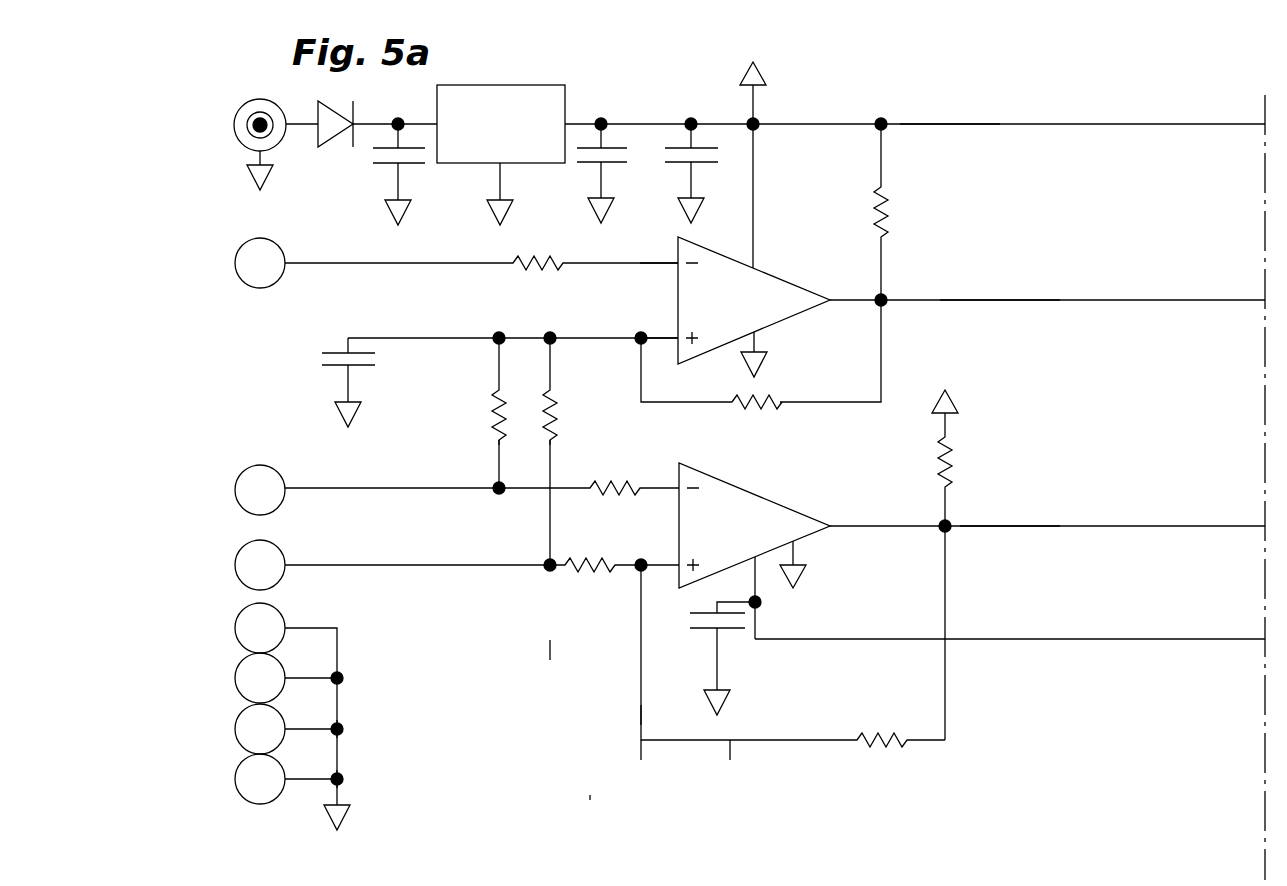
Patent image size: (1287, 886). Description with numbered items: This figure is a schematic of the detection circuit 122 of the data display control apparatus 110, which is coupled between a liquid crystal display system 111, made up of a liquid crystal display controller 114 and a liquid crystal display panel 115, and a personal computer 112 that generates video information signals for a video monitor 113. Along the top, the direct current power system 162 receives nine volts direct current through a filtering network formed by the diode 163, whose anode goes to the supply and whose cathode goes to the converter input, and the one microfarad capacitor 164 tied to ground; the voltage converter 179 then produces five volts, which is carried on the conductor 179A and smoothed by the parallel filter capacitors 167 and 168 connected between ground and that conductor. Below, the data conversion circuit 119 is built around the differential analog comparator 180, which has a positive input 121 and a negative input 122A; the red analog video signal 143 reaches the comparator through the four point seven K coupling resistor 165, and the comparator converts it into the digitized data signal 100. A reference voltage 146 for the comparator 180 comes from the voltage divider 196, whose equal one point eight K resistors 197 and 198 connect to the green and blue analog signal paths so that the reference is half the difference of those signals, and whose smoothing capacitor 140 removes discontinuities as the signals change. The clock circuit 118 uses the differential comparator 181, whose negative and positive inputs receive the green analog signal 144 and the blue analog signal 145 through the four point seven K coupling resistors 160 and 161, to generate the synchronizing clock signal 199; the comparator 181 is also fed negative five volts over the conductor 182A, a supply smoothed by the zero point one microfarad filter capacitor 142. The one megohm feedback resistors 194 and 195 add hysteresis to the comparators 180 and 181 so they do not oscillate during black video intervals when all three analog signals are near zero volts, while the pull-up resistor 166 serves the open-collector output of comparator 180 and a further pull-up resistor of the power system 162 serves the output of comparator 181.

The direct current power system 162 is at (268, 94).
The diode 163 is at (333, 147).
The capacitor 164 is at (395, 180).
The voltage converter 179 is at (550, 85).
The filter capacitor 167 is at (590, 148).
The filter capacitor 168 is at (673, 146).
The data conversion circuit 119 is at (791, 107).
The conductor 179A is at (934, 124).
The pullup resistor 166 is at (886, 213).
The coupling resistor 165 is at (528, 256).
The negative input 122A is at (675, 270).
The differential analog comparator 180 is at (792, 281).
The data signal 100 is at (1006, 300).
The red analog video information signal 143 is at (255, 288).
The reference voltage 146 is at (499, 331).
The smoothing capacitor 140 is at (334, 365).
The positive input 121 is at (676, 346).
The resistor 198 is at (558, 401).
The resistor 197 is at (492, 428).
The voltage divider 196 is at (621, 430).
The feedback resistor 195 is at (780, 412).
The green analog signal 144 is at (250, 468).
The coupling resistor 160 is at (613, 480).
The differential comparator 181 is at (786, 506).
The synchronizing clock signal 199 is at (999, 528).
The blue analog signal 145 is at (250, 542).
The coupling resistor 161 is at (588, 581).
The filter capacitor 142 is at (706, 632).
The conductor 182A is at (989, 642).
The clock circuit 118 is at (548, 656).
The liquid crystal display controller 114 is at (628, 719).
The liquid crystal display system 111 is at (628, 756).
The data display control apparatus 110 is at (590, 796).
The liquid crystal display panel 115 is at (731, 781).
The video monitor 113 is at (386, 731).
The personal computer 112 is at (374, 781).
The detection circuit 122 is at (236, 808).
The feedback resistor 194 is at (905, 746).